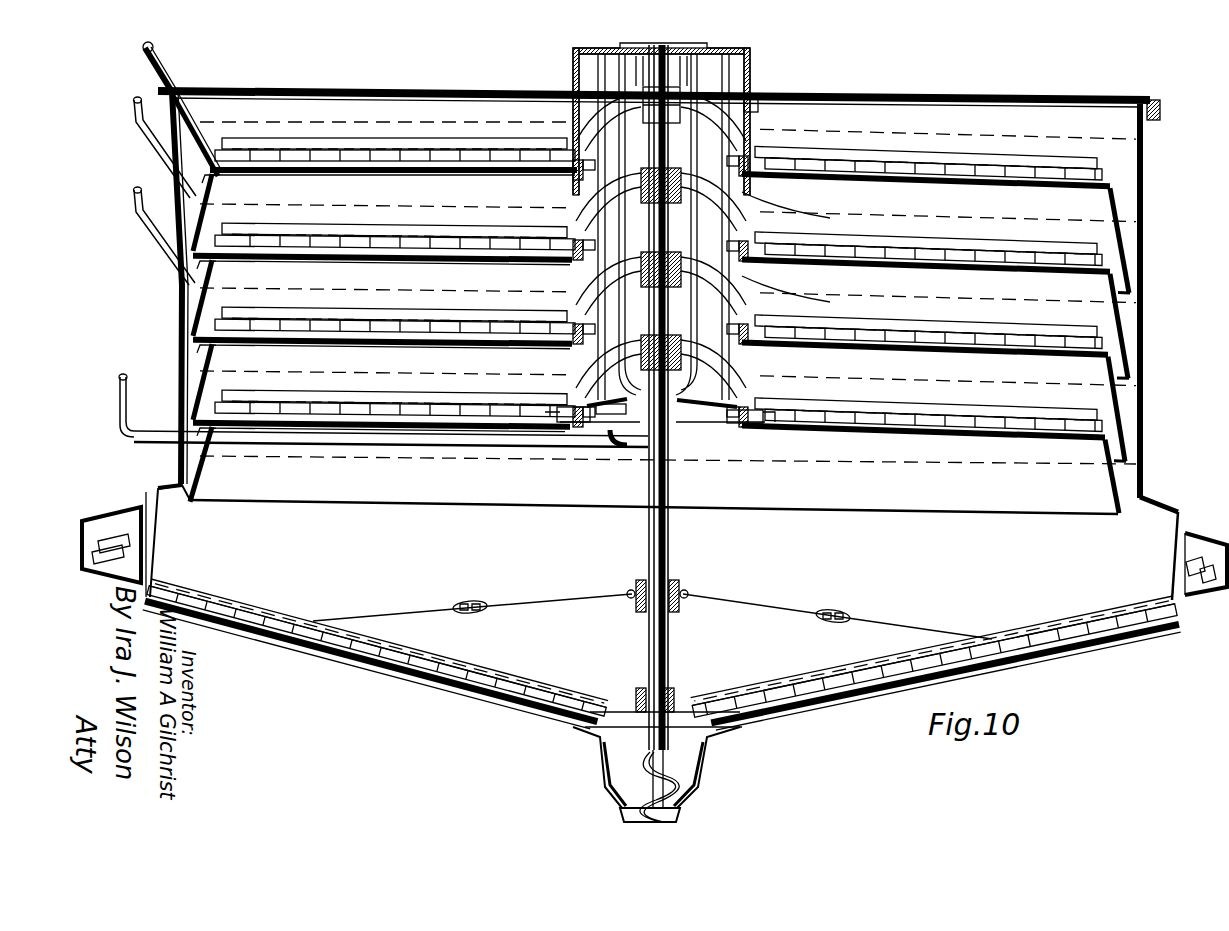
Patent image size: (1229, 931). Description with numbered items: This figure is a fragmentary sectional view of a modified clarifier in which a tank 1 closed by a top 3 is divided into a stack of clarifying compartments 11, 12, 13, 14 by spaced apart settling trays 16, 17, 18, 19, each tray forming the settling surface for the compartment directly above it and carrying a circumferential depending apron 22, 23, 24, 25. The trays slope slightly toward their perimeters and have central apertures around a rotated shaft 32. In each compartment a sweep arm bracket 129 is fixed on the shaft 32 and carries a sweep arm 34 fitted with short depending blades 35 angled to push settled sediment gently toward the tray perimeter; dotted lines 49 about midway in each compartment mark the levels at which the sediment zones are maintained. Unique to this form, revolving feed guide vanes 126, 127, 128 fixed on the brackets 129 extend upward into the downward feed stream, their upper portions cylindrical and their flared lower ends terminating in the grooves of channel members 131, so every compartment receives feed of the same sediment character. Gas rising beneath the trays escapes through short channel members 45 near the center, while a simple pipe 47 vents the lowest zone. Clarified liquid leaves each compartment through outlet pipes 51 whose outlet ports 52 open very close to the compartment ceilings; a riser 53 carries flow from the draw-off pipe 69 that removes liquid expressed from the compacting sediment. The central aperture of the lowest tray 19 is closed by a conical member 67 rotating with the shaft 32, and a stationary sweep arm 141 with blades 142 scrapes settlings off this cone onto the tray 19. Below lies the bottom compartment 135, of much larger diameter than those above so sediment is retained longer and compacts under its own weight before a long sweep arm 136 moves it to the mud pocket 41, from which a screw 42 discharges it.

The tank 1 is at (1146, 278).
The top 3 is at (363, 90).
The compartment 11 is at (393, 137).
The compartment 12 is at (382, 224).
The compartment 13 is at (382, 308).
The compartment 14 is at (381, 390).
The settling tray 16 is at (886, 184).
The settling tray 17 is at (861, 268).
The settling tray 18 is at (813, 352).
The settling tray 19 is at (828, 430).
The depending apron 22 is at (208, 215).
The depending apron 23 is at (208, 298).
The depending apron 24 is at (208, 378).
The depending apron 25 is at (208, 466).
The shaft 32 is at (668, 483).
The sweep arm 34 is at (348, 138).
The blades 35 is at (405, 412).
The mud pocket 41 is at (698, 800).
The screw 42 is at (664, 762).
The channel member 45 is at (575, 96).
The pipe 47 is at (620, 300).
The dotted lines 49 is at (946, 136).
The clarified liquid outlet pipe 51 is at (162, 76).
The outlet port 52 is at (215, 182).
The riser 53 is at (130, 116).
The conical member 67 is at (699, 403).
The draw-off pipe 69 is at (494, 444).
The feed guide vane 126 is at (752, 112).
The feed guide vane 127 is at (770, 216).
The feed guide vane 128 is at (765, 295).
The sweep arm bracket 129 is at (758, 138).
The channel member 131 is at (745, 197).
The bottom compartment 135 is at (340, 566).
The long sweep arm 136 is at (440, 653).
The stationary sweep arm 141 is at (570, 412).
The blades 142 is at (617, 404).